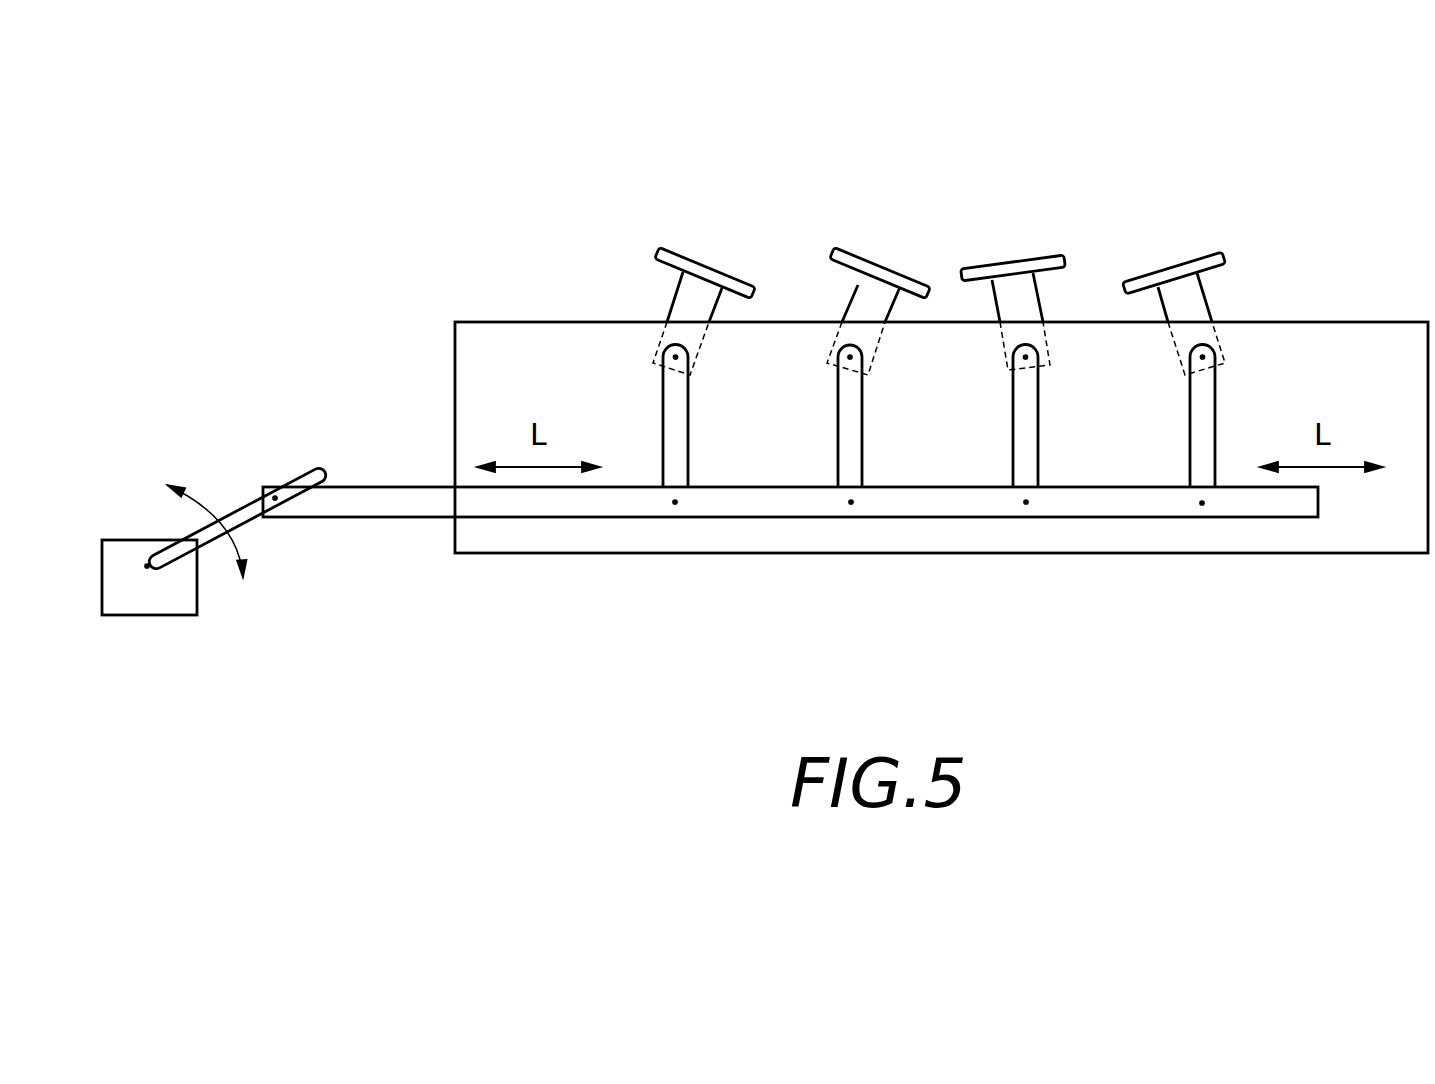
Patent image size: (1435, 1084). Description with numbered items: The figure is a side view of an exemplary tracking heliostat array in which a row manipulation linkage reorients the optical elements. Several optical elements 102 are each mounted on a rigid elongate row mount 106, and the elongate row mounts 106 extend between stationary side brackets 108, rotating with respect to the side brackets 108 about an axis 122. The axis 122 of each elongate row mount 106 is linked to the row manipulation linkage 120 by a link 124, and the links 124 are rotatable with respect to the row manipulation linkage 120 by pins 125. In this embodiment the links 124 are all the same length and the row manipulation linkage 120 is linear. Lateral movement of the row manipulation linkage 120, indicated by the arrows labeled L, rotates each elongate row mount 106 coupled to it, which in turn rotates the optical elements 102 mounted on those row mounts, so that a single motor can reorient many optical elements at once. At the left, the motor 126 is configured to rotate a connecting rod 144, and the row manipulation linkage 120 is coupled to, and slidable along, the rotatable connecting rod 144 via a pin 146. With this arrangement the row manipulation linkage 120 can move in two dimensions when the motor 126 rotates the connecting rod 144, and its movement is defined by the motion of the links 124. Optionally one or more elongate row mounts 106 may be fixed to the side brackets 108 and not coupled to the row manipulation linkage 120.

The optical element 102 is at (676, 257).
The elongate row mount 106 is at (685, 300).
The side bracket 108 is at (467, 368).
The row manipulation linkage 120 is at (555, 505).
The axis 122 is at (675, 357).
The link 124 is at (857, 455).
The pin 125 is at (675, 502).
The motor 126 is at (132, 597).
The connecting rod 144 is at (248, 507).
The pin 146 is at (277, 500).